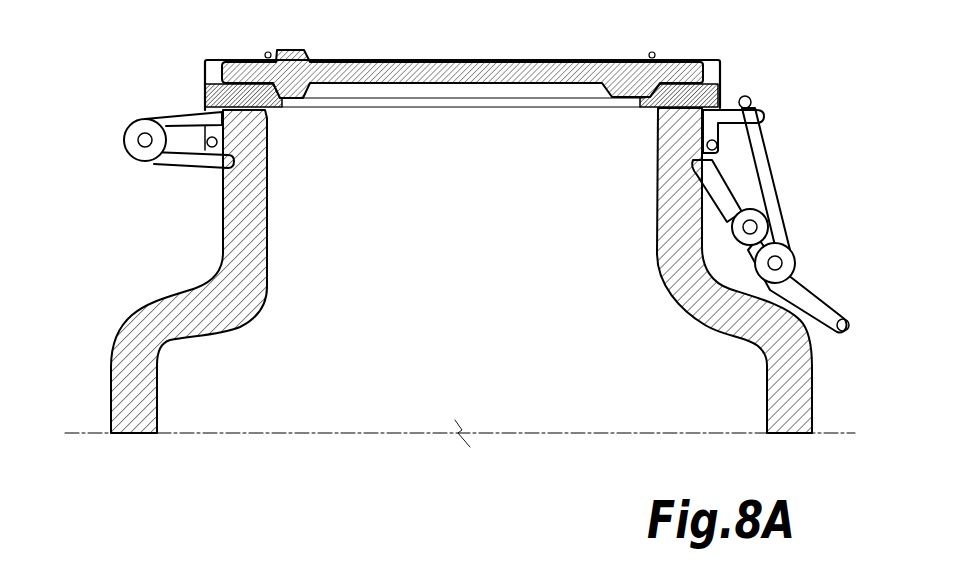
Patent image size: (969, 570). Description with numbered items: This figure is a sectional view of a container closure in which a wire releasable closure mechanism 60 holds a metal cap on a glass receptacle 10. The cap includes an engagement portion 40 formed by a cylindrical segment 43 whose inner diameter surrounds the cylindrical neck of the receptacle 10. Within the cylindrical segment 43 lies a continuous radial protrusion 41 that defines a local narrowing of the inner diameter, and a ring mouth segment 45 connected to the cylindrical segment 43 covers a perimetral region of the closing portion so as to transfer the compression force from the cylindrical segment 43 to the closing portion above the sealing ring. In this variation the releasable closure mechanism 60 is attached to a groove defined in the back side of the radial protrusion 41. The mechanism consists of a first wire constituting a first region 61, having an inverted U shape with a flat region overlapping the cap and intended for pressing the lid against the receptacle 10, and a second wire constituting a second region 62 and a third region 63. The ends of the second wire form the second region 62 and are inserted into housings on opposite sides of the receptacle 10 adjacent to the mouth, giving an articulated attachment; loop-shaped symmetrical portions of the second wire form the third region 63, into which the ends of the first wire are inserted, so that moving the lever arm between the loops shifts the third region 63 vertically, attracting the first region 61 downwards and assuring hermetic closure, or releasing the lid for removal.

The glass receptacle 10 is at (658, 245).
The engagement portion 40 is at (380, 69).
The radial protrusion 41 is at (205, 108).
The cylindrical segment 43 is at (203, 83).
The ring mouth segment 45 is at (247, 59).
The releasable closure mechanism 60 is at (466, 214).
The first region 61 is at (187, 122).
The second region 62 is at (197, 158).
The third region 63 is at (783, 211).